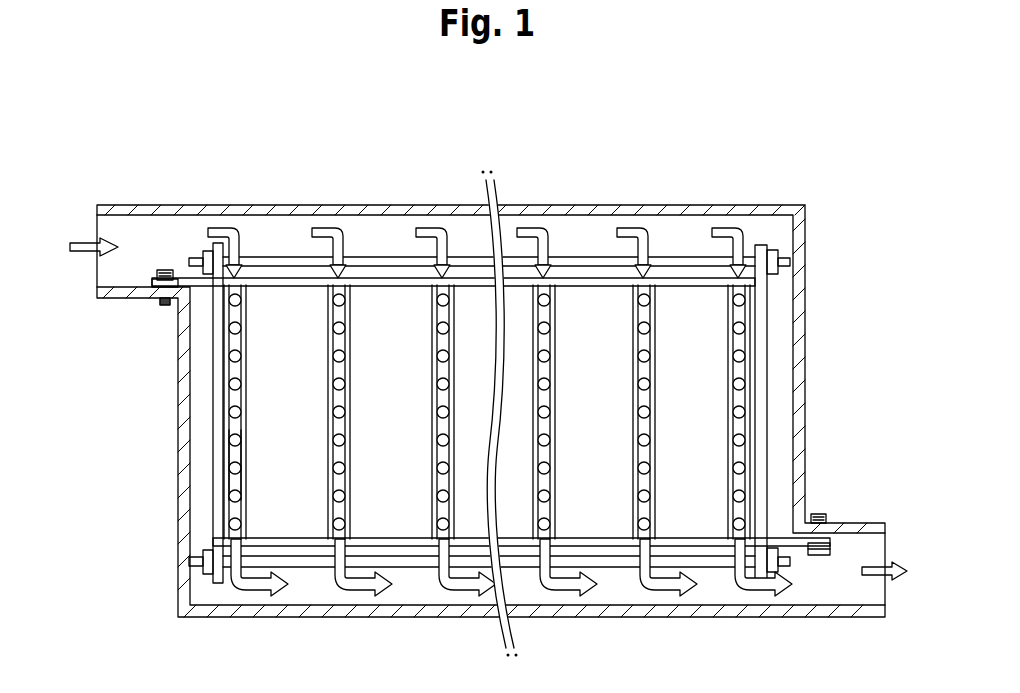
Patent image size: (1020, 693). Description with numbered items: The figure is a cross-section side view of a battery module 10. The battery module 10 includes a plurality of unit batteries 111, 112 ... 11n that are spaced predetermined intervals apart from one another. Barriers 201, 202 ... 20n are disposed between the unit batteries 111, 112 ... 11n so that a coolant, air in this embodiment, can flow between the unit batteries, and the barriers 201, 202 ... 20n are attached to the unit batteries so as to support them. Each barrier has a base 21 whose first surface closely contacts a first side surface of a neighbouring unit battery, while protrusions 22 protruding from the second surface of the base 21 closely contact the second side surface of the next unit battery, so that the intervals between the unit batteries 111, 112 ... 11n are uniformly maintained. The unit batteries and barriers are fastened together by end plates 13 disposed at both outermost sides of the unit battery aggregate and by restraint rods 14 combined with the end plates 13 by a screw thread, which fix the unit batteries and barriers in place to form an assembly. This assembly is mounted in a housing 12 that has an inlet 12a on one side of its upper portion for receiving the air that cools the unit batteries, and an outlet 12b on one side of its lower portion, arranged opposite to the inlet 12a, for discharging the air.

The battery module 10 is at (503, 126).
The unit battery 111 is at (253, 381).
The unit battery 112 is at (352, 381).
The unit battery 11n is at (659, 381).
The housing 12 is at (743, 205).
The inlet 12a is at (108, 236).
The outlet 12b is at (878, 594).
The end plate 13 is at (215, 350).
The restraint rod 14 is at (417, 256).
The barrier 201 is at (193, 473).
The barrier 202 is at (291, 473).
The barrier 20n is at (696, 474).
The base 21 is at (237, 458).
The protrusion 22 is at (236, 498).